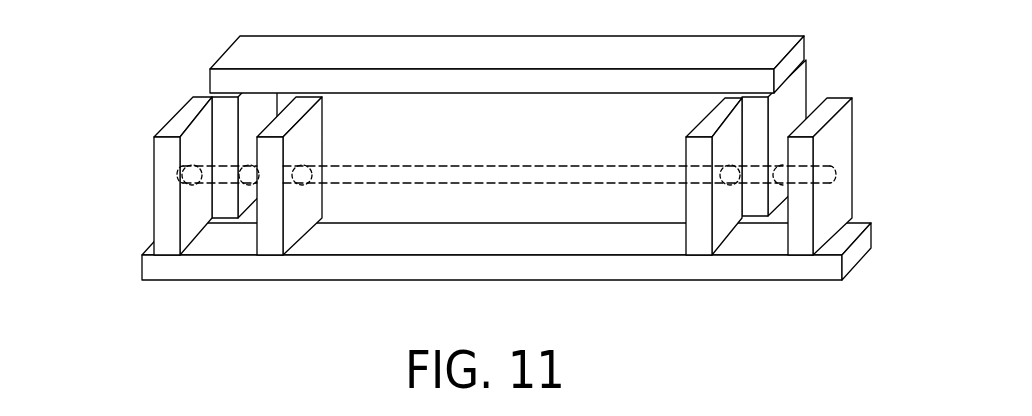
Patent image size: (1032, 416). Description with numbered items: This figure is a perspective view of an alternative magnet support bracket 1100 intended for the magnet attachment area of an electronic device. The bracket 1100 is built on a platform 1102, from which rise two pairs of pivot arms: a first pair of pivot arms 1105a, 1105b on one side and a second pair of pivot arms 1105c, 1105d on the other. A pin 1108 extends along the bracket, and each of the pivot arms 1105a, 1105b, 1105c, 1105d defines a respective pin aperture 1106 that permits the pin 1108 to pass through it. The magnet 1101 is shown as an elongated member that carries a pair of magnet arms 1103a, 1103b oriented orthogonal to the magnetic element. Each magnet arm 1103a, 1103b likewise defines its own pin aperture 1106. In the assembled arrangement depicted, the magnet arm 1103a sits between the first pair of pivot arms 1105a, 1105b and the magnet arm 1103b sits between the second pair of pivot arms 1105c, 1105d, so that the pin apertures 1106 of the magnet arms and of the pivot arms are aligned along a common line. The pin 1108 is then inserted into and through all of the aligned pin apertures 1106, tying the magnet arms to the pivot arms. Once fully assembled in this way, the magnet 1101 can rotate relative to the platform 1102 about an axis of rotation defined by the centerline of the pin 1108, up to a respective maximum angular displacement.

The magnet support bracket 1100 is at (92, 151).
The magnet 1101 is at (523, 37).
The platform 1102 is at (505, 282).
The magnet arm 1103a is at (222, 122).
The magnet arm 1103b is at (807, 80).
The pivot arm 1105a is at (168, 238).
The pivot arm 1105b is at (272, 238).
The pivot arm 1105c is at (697, 238).
The pivot arm 1105d is at (800, 238).
The pin aperture 1106 is at (304, 162).
The pin 1108 is at (557, 166).